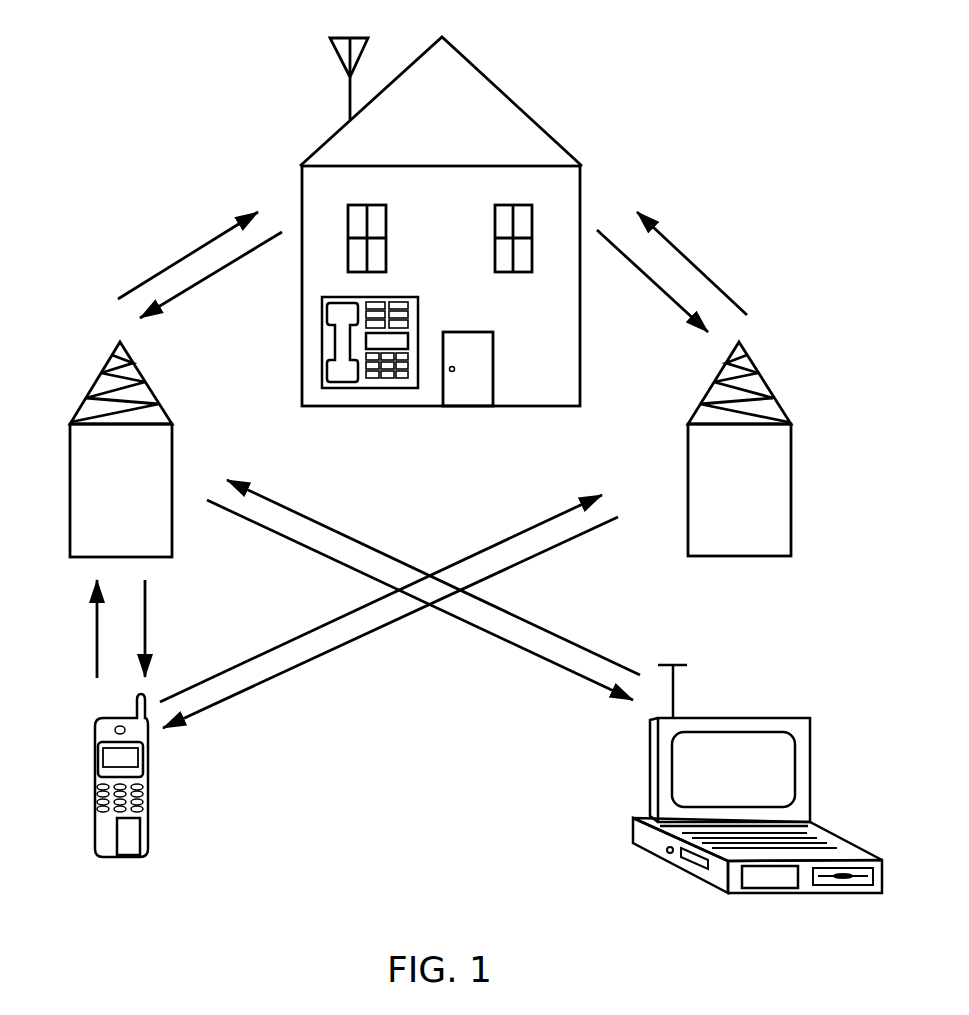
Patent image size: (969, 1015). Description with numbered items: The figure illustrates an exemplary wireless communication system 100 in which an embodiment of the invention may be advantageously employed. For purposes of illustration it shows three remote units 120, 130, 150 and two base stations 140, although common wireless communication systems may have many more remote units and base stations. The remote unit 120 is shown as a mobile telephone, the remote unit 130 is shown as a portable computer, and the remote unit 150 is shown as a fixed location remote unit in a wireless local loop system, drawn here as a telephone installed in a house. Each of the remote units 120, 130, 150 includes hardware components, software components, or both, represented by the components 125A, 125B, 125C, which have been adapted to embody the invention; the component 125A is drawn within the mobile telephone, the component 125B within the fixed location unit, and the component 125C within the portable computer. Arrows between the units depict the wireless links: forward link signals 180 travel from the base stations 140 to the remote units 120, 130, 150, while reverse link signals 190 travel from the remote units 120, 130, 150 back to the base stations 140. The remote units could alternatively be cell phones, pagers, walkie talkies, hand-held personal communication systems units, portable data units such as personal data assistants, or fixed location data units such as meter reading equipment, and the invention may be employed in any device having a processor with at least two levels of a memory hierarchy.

The wireless communication system 100 is at (142, 82).
The remote unit 120 is at (97, 735).
The component 125A is at (132, 842).
The component 125B is at (395, 392).
The component 125C is at (778, 878).
The remote unit 130 is at (788, 718).
The base station 140 is at (96, 378).
The remote unit 150 is at (322, 352).
The forward link signal 180 is at (190, 250).
The reverse link signal 190 is at (196, 290).